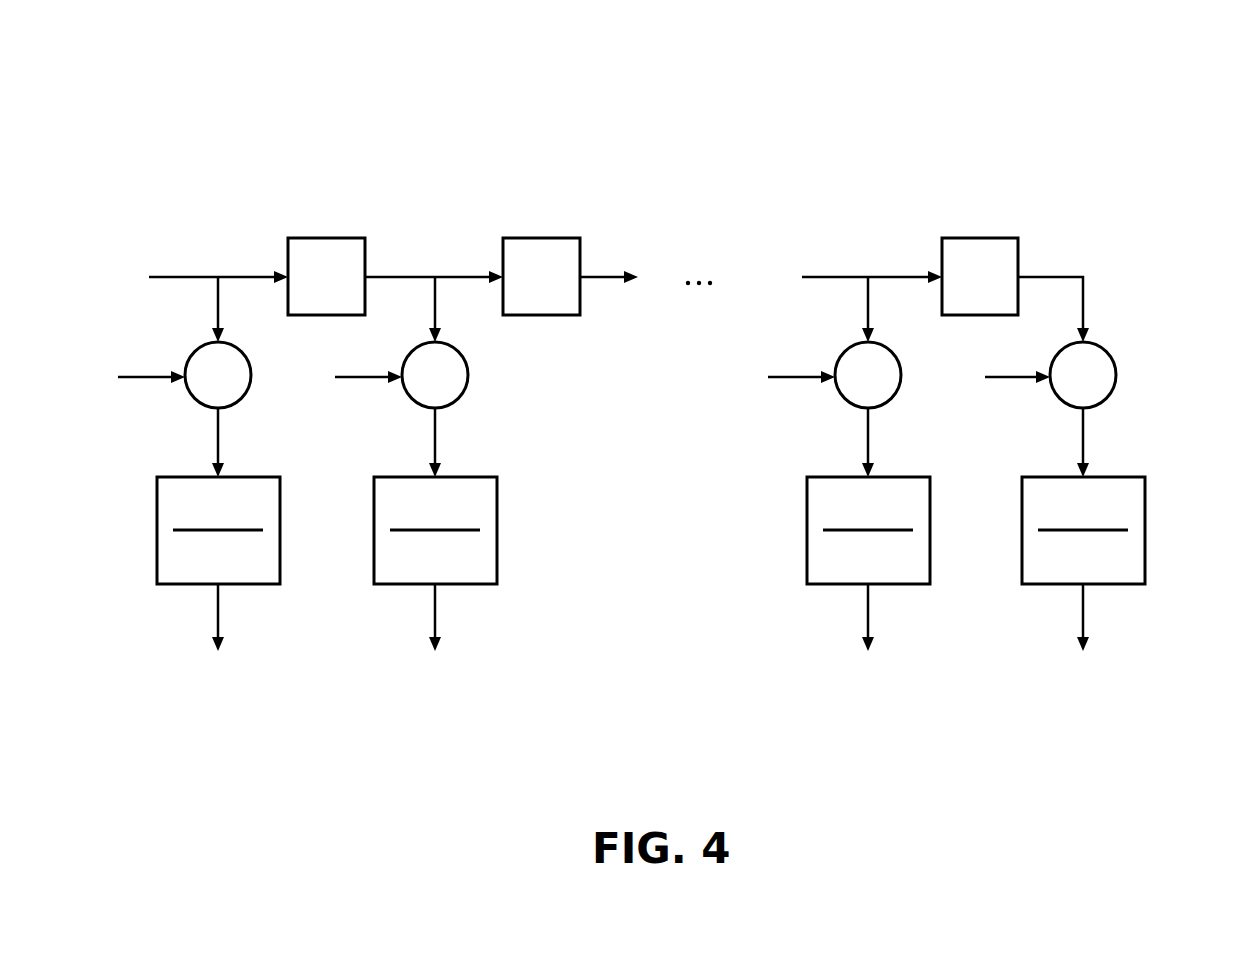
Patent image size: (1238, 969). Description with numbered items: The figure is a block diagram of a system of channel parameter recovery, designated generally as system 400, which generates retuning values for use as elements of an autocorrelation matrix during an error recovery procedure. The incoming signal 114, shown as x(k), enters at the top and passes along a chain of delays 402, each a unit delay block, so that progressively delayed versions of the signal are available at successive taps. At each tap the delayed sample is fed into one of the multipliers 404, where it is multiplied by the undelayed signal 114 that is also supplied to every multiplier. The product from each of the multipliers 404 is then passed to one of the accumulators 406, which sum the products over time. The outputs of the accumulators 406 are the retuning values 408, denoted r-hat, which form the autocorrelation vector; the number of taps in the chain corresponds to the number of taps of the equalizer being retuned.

The system of channel parameter recovery 400 is at (1132, 75).
The signal 114 is at (168, 236).
The delays 402 is at (326, 238).
The multipliers 404 is at (240, 400).
The accumulators 406 is at (158, 477).
The retuning values 408 is at (198, 663).